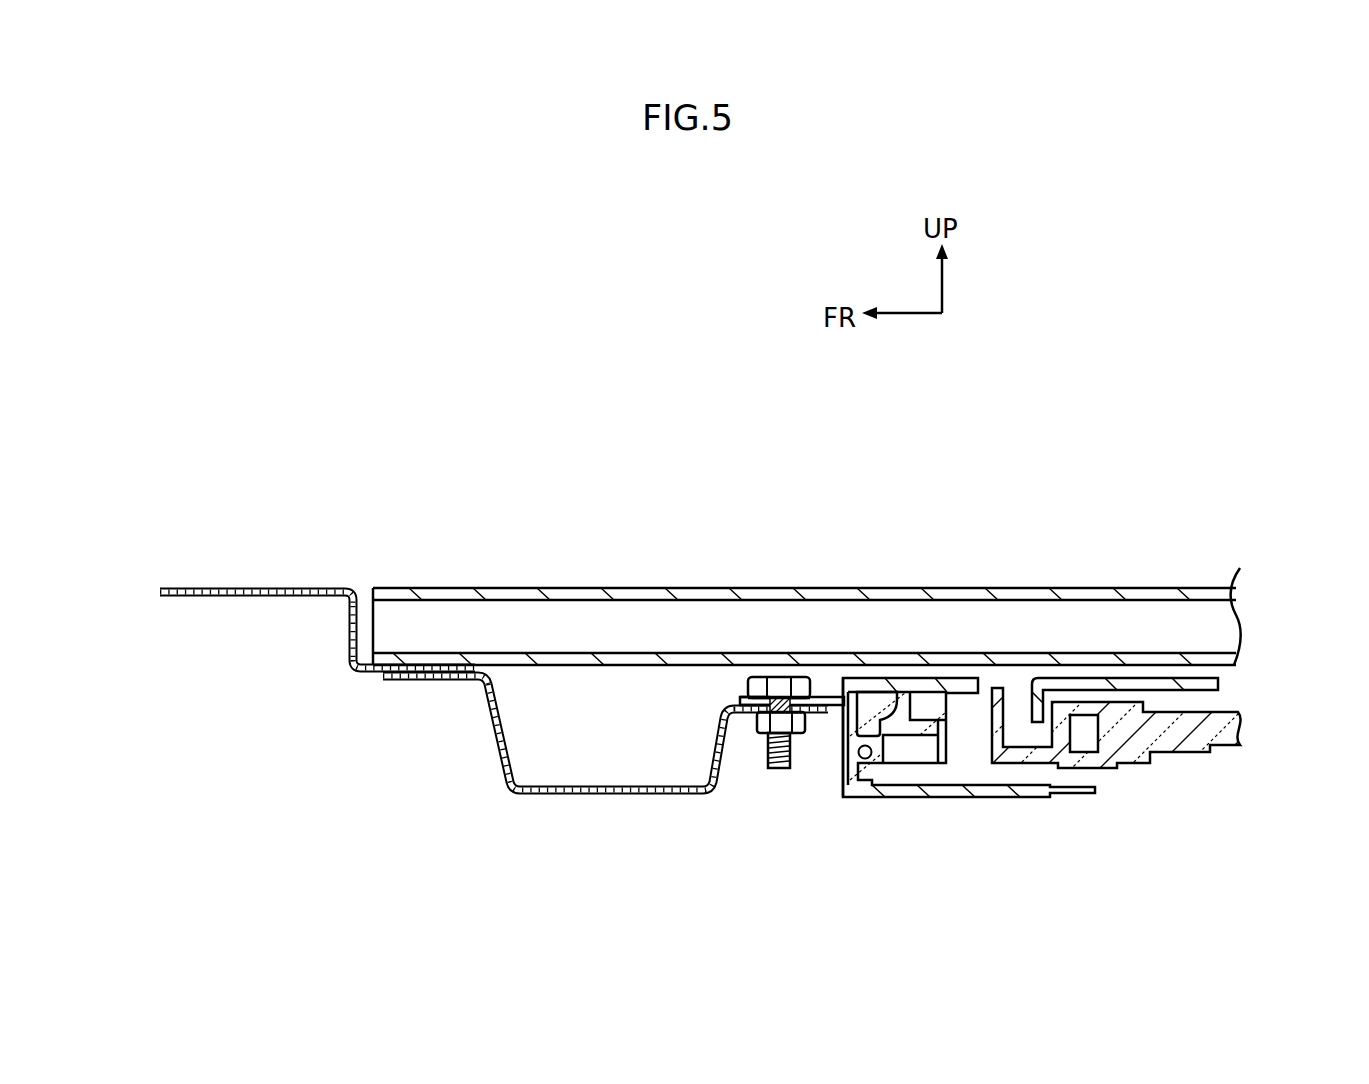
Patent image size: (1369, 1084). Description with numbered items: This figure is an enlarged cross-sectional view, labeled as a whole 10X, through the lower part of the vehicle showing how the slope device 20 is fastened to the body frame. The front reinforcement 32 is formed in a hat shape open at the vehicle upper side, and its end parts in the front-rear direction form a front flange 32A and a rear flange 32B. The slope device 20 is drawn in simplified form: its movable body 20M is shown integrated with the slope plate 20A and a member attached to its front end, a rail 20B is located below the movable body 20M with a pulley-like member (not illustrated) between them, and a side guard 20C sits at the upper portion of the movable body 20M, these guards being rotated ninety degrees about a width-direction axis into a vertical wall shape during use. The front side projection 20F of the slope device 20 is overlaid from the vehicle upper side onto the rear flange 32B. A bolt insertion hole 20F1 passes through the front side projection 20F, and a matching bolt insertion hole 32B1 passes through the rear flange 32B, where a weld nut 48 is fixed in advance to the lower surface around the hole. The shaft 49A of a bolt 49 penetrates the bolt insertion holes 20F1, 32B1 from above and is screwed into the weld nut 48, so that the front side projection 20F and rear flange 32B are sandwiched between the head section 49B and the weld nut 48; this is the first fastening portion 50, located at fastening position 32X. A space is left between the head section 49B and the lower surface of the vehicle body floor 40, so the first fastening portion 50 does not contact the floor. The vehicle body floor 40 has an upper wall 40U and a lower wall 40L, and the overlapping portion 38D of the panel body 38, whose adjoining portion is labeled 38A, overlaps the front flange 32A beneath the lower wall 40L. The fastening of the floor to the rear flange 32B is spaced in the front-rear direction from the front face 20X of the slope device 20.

The vehicle lower structure 10X is at (705, 430).
The slope device 20 is at (1022, 818).
The slope plate 20A is at (1237, 746).
The rail 20B is at (978, 697).
The side guard 20C is at (1120, 679).
The front side projection 20F is at (808, 694).
The bolt insertion hole 20F1 is at (747, 673).
The movable body 20M is at (1138, 770).
The front face 20X is at (842, 776).
The front reinforcement 32 is at (480, 782).
The front flange 32A is at (440, 681).
The rear flange 32B is at (752, 714).
The bolt insertion hole 32B1 is at (766, 737).
The fastening position 32X is at (750, 692).
The panel body 38 is at (307, 572).
The floor panel general portion 38A is at (246, 589).
The overlapping portion 38D is at (386, 664).
The vehicle body floor 40 is at (938, 586).
The upper wall 40U is at (555, 588).
The lower wall 40L is at (523, 653).
The weld nut 48 is at (797, 731).
The bolt 49 is at (807, 673).
The shaft 49A is at (793, 750).
The head section 49B is at (779, 690).
The first fastening portion 50 is at (743, 675).